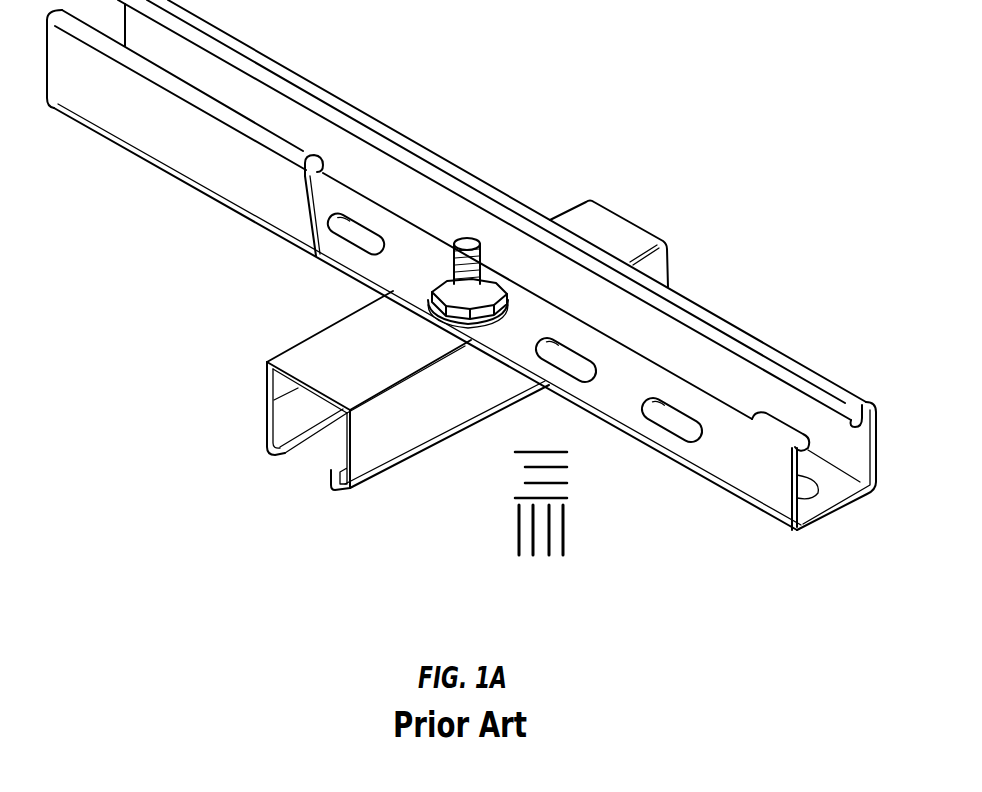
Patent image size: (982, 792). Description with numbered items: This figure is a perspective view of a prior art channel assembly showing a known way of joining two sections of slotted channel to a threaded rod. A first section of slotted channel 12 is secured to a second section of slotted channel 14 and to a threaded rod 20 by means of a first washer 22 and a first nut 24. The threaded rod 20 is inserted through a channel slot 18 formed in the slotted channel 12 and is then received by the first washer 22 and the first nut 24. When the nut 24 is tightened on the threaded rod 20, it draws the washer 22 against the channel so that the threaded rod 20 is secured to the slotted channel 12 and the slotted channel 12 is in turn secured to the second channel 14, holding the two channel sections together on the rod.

The first slotted channel 12 is at (783, 350).
The second slotted channel 14 is at (644, 224).
The channel slot 18 is at (672, 427).
The threaded rod 20 is at (472, 240).
The first washer 22 is at (478, 326).
The first nut 24 is at (450, 303).